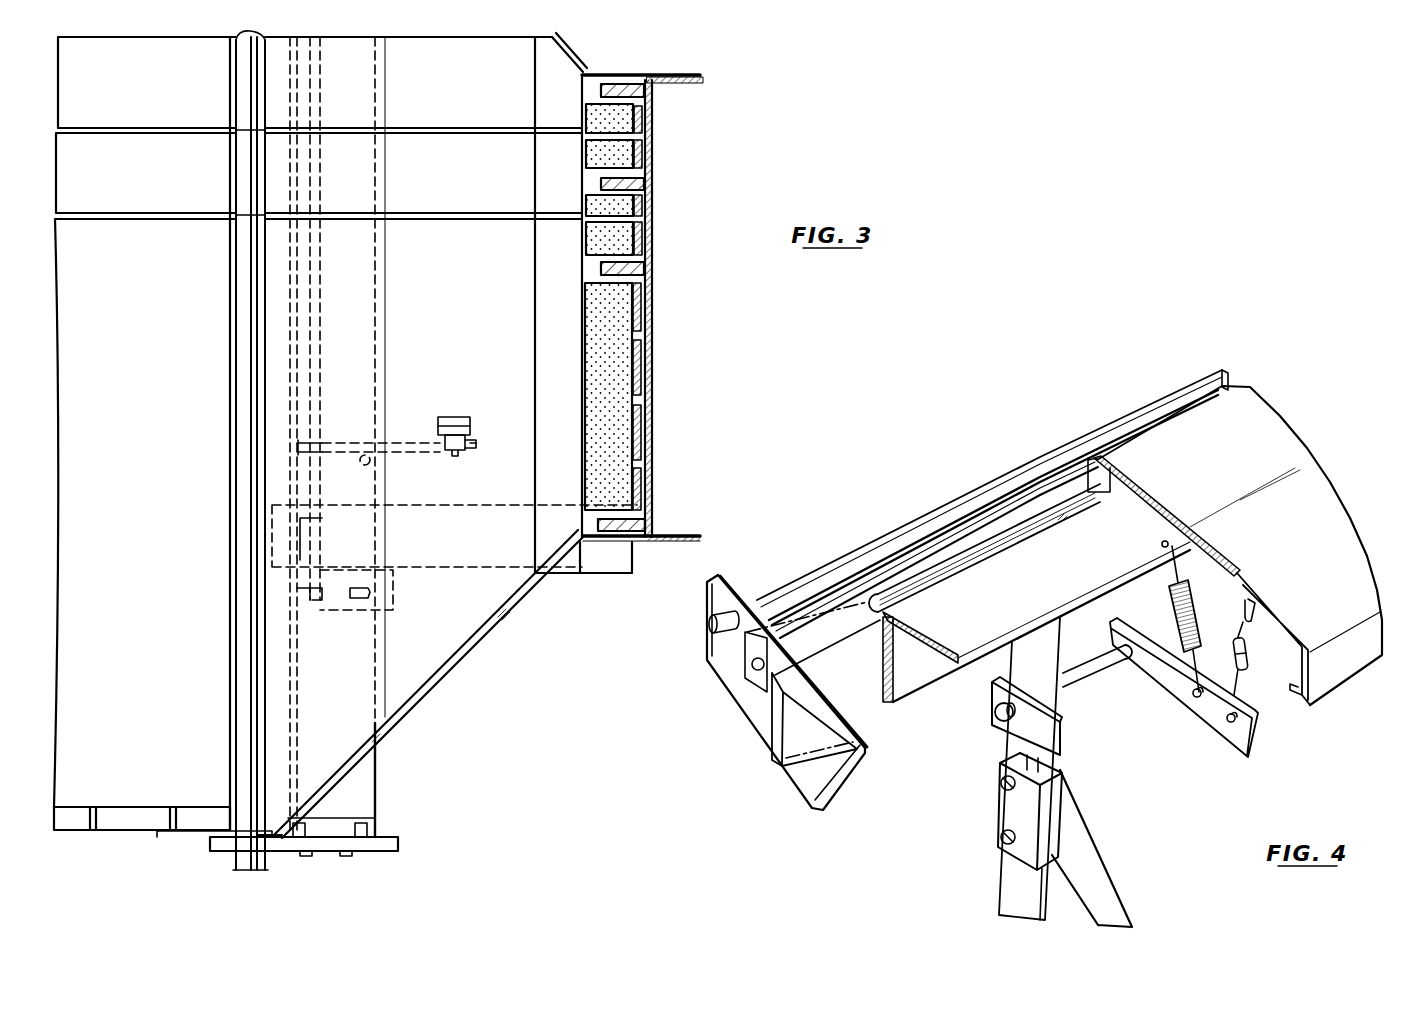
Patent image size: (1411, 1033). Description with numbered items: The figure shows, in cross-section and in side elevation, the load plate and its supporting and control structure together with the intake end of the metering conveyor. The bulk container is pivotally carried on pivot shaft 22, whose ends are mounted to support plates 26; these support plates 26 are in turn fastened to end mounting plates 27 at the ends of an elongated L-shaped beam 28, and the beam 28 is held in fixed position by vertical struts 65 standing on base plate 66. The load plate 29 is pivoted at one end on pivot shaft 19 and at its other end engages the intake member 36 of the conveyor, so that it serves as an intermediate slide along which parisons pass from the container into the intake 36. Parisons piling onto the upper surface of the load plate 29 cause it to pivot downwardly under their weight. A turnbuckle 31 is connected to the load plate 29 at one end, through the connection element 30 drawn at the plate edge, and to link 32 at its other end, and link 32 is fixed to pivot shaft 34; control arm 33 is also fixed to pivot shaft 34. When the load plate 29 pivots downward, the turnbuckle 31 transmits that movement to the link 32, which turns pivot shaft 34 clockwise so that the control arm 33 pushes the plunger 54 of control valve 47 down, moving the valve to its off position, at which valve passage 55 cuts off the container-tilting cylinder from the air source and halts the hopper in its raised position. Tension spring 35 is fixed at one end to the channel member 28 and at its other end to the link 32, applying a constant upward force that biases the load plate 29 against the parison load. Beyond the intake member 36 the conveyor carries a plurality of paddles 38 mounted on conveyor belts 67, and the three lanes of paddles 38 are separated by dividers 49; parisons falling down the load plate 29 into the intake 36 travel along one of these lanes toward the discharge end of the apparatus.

In FIG. 4, the pivot shaft 19 is at (997, 540).
In FIG. 3, the pivot shaft 22 is at (236, 368).
In FIG. 4, the pivot shaft 22 is at (886, 540).
In FIG. 3, the support plates 26 is at (398, 846).
In FIG. 4, the support plates 26 is at (739, 598).
In FIG. 3, the end mounting plates 27 is at (375, 820).
In FIG. 4, the end mounting plates 27 is at (814, 719).
In FIG. 3, the L-shaped beam 28 is at (370, 772).
In FIG. 4, the L-shaped beam 28 is at (966, 615).
In FIG. 3, the load plate 29 is at (443, 329).
In FIG. 4, the load plate 29 is at (1207, 454).
In FIG. 3, the hook bracket 30 is at (455, 416).
In FIG. 4, the hook bracket 30 is at (1247, 594).
In FIG. 3, the turnbuckle 31 is at (472, 443).
In FIG. 4, the turnbuckle 31 is at (1250, 660).
In FIG. 3, the link 32 is at (420, 452).
In FIG. 4, the link 32 is at (1176, 700).
In FIG. 3, the control arm 33 is at (333, 602).
In FIG. 4, the control arm 33 is at (1048, 734).
In FIG. 3, the pivot shaft 34 is at (322, 333).
In FIG. 4, the pivot shaft 34 is at (1093, 673).
In FIG. 3, the tension spring 35 is at (362, 463).
In FIG. 4, the tension spring 35 is at (1172, 598).
In FIG. 3, the intake member 36 is at (539, 329).
In FIG. 3, the paddles 38 is at (625, 150).
In FIG. 4, the control valve 47 is at (1010, 808).
In FIG. 3, the dividers 49 is at (648, 100).
In FIG. 4, the plunger 54 is at (1028, 758).
In FIG. 3, the valve passage 55 is at (393, 592).
In FIG. 3, the vertical struts 65 is at (305, 522).
In FIG. 4, the vertical struts 65 is at (1025, 674).
In FIG. 3, the base plate 66 is at (598, 567).
In FIG. 3, the conveyor belts 67 is at (648, 392).